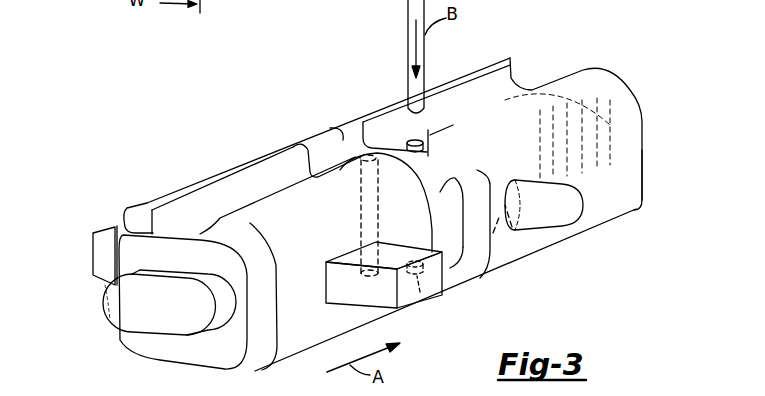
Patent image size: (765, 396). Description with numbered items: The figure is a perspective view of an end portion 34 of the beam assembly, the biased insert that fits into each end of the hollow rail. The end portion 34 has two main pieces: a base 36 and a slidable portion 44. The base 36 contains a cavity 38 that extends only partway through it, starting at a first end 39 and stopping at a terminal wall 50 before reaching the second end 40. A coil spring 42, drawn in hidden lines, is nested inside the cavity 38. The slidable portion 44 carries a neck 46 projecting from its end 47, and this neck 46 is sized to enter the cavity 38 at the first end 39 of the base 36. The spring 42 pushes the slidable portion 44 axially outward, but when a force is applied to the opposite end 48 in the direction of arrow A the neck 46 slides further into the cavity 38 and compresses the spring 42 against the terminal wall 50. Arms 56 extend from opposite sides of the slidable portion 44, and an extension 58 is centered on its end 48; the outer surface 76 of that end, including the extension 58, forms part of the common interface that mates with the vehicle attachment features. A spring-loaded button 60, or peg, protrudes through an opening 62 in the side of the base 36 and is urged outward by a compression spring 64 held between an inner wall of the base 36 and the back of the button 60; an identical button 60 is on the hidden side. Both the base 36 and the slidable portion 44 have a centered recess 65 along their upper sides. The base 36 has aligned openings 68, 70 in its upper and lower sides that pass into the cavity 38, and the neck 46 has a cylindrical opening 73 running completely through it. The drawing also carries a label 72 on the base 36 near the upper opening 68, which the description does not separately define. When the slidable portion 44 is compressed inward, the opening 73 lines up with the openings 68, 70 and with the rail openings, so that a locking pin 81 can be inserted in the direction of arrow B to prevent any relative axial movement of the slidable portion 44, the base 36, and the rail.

The end portion 34 is at (113, 196).
The base 36 is at (415, 137).
The cavity 38 is at (462, 230).
The first end 39 is at (343, 137).
The second end 40 is at (608, 78).
The coil spring 42 is at (610, 125).
The slidable portion 44 is at (227, 165).
The neck 46 is at (445, 278).
The end 47 is at (305, 175).
The end 48 is at (103, 307).
The terminal wall 50 is at (627, 180).
The arms 56 is at (105, 266).
The extension 58 is at (118, 315).
The spring-loaded button 60 is at (566, 210).
The opening 62 is at (512, 227).
The compression spring 64 is at (493, 233).
The centered recess 65 is at (178, 230).
The opening 68 is at (415, 140).
The opening 70 is at (420, 292).
The side wall 72 is at (430, 180).
The cylindrical opening 73 is at (360, 226).
The surface 76 is at (133, 222).
The locking pin 81 is at (405, 45).